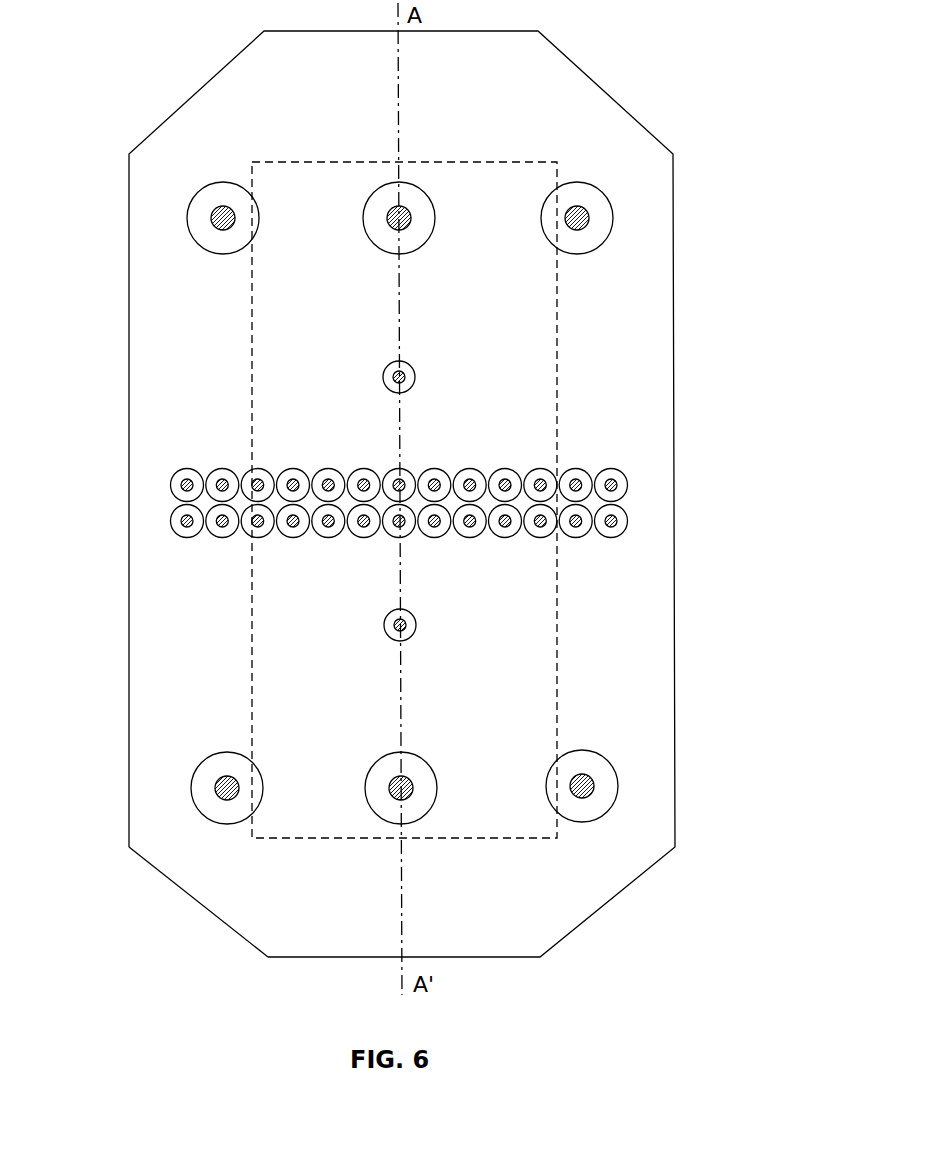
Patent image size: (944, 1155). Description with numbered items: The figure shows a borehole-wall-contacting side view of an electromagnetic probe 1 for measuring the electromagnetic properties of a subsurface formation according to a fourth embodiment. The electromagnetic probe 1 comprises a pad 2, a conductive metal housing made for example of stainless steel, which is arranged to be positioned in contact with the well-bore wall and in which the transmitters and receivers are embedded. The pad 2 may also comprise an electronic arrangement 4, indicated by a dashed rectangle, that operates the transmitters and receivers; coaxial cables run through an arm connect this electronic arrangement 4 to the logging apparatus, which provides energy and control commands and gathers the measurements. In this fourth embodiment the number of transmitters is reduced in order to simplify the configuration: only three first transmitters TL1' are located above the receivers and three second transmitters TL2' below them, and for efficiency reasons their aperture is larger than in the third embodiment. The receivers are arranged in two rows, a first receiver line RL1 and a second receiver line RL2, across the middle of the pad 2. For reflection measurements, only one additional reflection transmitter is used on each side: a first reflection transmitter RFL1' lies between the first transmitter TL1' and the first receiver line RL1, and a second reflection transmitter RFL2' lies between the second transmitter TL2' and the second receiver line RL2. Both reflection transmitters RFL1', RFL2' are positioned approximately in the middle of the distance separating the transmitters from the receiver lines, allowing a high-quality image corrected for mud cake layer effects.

The electromagnetic probe 1 is at (126, 94).
The pad 2 is at (128, 855).
The electronic arrangement 4 is at (235, 689).
The first transmitter TL1' is at (489, 218).
The second transmitter TL2' is at (490, 793).
The first reflection transmitter RFL1' is at (590, 370).
The second reflection transmitter RFL2' is at (592, 621).
The first receiver line RL1 is at (648, 485).
The second receiver line RL2 is at (650, 520).